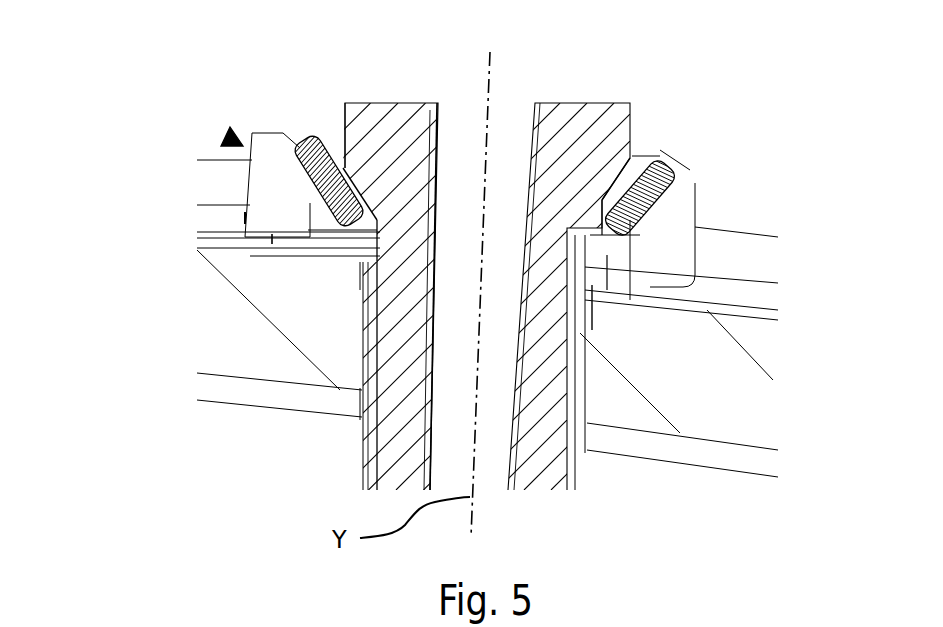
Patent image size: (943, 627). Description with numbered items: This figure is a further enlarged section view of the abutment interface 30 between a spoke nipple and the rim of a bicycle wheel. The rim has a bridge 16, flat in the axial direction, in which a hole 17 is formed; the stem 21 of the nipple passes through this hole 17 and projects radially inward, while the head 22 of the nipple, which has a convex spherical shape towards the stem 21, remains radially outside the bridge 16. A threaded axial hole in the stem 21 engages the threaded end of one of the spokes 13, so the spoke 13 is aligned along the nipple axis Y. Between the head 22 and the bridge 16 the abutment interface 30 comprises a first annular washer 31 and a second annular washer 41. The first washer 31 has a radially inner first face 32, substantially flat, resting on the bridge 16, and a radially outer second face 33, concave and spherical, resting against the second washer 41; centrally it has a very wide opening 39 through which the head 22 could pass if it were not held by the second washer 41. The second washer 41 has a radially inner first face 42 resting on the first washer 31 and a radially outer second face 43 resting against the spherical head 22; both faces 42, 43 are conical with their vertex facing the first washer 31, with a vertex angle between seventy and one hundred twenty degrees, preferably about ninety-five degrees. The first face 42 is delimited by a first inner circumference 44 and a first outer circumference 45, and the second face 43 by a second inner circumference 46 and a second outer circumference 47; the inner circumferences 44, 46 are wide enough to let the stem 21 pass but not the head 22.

The spoke 13 is at (430, 395).
The bridge 16 is at (302, 327).
The hole 17 is at (370, 360).
The stem 21 is at (552, 352).
The head 22 is at (387, 150).
The abutment interface 30 is at (231, 128).
The first annular washer 31 is at (272, 190).
The first face 32 is at (272, 238).
The second face 33 is at (291, 156).
The opening 39 is at (607, 262).
The second annular washer 41 is at (647, 198).
The first face 42 is at (333, 203).
The second face 43 is at (332, 162).
The first inner circumference 44 is at (605, 237).
The first outer circumference 45 is at (672, 188).
The second inner circumference 46 is at (608, 200).
The second outer circumference 47 is at (660, 160).